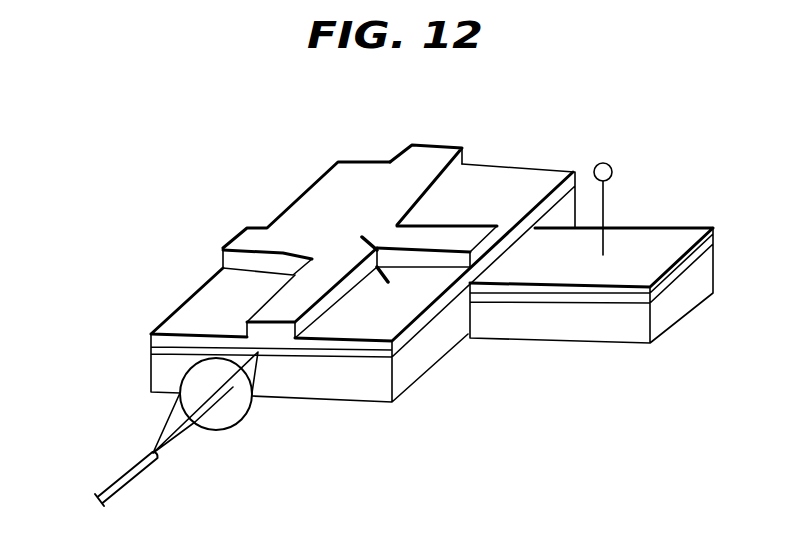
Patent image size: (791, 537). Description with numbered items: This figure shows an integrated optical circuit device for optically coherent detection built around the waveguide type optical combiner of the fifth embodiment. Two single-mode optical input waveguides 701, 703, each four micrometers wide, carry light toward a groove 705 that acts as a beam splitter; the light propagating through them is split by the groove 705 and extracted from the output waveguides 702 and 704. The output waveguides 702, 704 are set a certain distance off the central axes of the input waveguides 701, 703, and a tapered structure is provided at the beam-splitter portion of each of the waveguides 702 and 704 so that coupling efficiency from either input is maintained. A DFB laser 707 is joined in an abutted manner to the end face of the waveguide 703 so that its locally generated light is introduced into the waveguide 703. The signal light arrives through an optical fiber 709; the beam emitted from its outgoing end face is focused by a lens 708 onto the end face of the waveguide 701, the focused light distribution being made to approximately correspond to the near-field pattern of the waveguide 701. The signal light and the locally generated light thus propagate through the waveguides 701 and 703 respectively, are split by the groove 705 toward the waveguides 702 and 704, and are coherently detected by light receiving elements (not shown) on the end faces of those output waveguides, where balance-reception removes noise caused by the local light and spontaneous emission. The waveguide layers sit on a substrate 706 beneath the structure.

The optical input waveguide 701 is at (272, 330).
The optical output waveguide 702 is at (253, 243).
The optical input waveguide 703 is at (448, 238).
The optical output waveguide 704 is at (440, 153).
The groove (beam splitter) 705 is at (362, 237).
The substrate 706 is at (398, 371).
The DFB laser 707 is at (600, 327).
The lens 708 is at (237, 410).
The optical fiber 709 is at (120, 480).